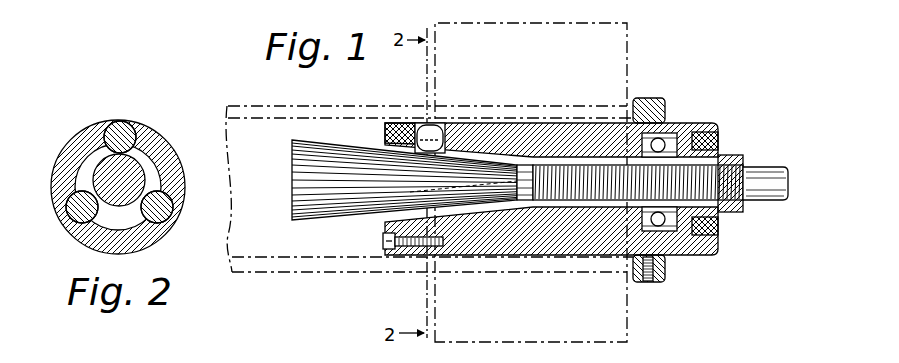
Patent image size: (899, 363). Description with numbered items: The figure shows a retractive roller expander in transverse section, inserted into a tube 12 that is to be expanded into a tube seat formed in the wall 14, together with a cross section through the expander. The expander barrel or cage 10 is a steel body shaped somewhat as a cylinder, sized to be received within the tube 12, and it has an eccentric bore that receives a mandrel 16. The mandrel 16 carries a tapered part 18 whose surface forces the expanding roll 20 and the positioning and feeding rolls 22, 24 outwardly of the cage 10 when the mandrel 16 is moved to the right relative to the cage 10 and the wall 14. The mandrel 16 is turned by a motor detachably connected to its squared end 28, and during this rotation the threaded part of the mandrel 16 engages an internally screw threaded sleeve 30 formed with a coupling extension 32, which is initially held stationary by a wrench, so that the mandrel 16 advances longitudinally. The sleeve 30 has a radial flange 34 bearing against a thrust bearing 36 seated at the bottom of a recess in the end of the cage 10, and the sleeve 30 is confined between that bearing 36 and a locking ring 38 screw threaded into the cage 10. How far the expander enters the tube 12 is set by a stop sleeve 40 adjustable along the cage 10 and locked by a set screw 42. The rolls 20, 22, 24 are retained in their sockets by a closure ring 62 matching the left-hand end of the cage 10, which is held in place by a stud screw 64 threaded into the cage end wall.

In FIG. 1, the expander barrel or cage 10 is at (553, 128).
In FIG. 1, the tube 12 is at (319, 272).
In FIG. 1, the wall 14 is at (628, 57).
In FIG. 1, the mandrel 16 is at (300, 179).
In FIG. 1, the tapered part 18 is at (360, 217).
In FIG. 1, the expanding roll 20 is at (438, 125).
In FIG. 2, the expanding roll 20 is at (125, 124).
In FIG. 2, the positioning and feeding roll 22 is at (70, 218).
In FIG. 2, the positioning and feeding roll 24 is at (173, 223).
In FIG. 1, the squared end 28 is at (767, 203).
In FIG. 1, the internally screw threaded sleeve 30 is at (723, 217).
In FIG. 1, the coupling extension 32 is at (733, 157).
In FIG. 1, the radial flange 34 is at (685, 135).
In FIG. 1, the thrust bearing 36 is at (672, 231).
In FIG. 1, the locking ring 38 is at (723, 140).
In FIG. 1, the stop sleeve 40 is at (658, 282).
In FIG. 1, the set screw 42 is at (648, 283).
In FIG. 1, the closure ring 62 is at (398, 122).
In FIG. 1, the stud screw 64 is at (405, 243).